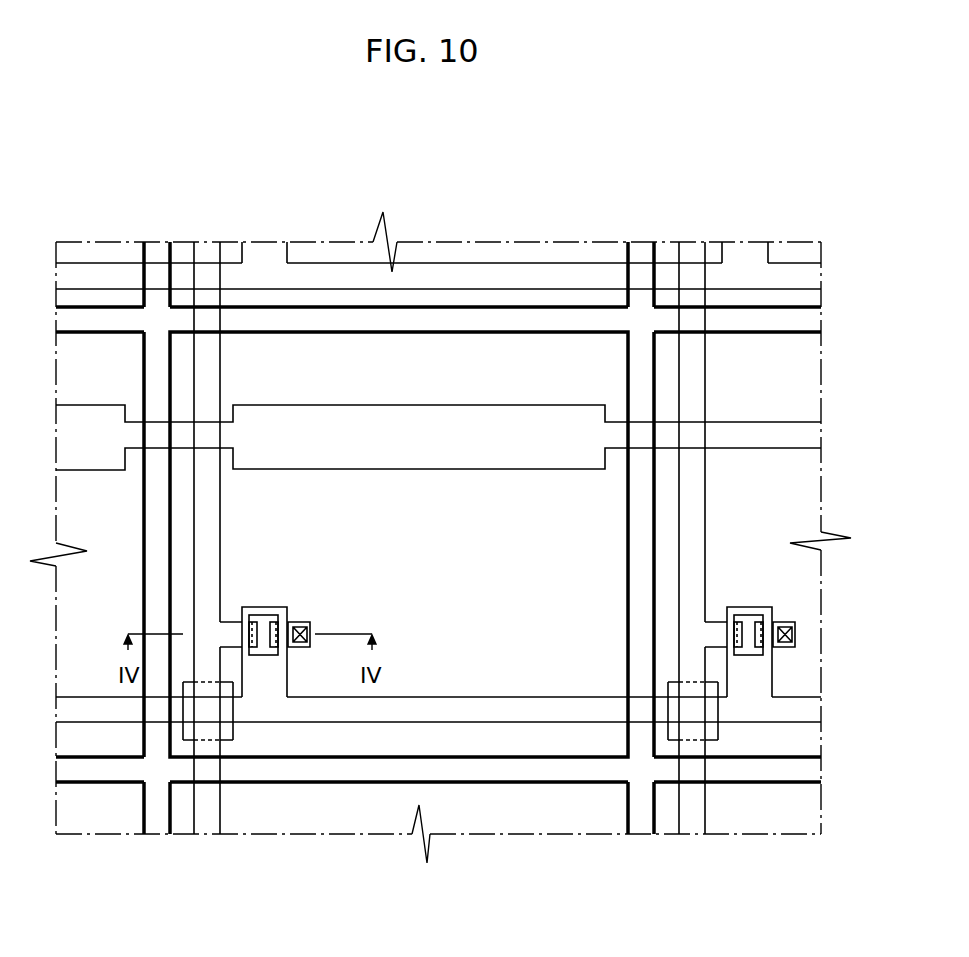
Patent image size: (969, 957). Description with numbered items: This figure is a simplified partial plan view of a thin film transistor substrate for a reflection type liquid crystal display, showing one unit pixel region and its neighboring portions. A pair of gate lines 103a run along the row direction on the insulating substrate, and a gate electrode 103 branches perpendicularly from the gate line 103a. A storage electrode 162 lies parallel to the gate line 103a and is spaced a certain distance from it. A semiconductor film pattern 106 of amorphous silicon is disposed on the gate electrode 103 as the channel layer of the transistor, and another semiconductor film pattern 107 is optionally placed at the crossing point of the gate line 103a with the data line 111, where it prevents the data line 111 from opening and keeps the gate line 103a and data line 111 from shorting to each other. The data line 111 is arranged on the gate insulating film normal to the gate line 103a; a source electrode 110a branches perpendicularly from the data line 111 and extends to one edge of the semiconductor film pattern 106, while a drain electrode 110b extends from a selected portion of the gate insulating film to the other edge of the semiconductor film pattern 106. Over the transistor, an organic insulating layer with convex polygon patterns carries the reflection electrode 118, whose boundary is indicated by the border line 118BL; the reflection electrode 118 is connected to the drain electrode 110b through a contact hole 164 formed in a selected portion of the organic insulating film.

The gate line 103a is at (338, 270).
The gate electrode 103 is at (277, 622).
The semiconductor film pattern 106 is at (263, 655).
The semiconductor film pattern 107 is at (230, 745).
The source electrode 110a is at (228, 637).
The drain electrode 110b is at (312, 632).
The data line 111 is at (202, 255).
The reflection electrode 118 is at (545, 610).
The border line of the reflection electrode 118BL is at (555, 757).
The storage electrode 162 is at (417, 430).
The contact hole 164 is at (297, 623).